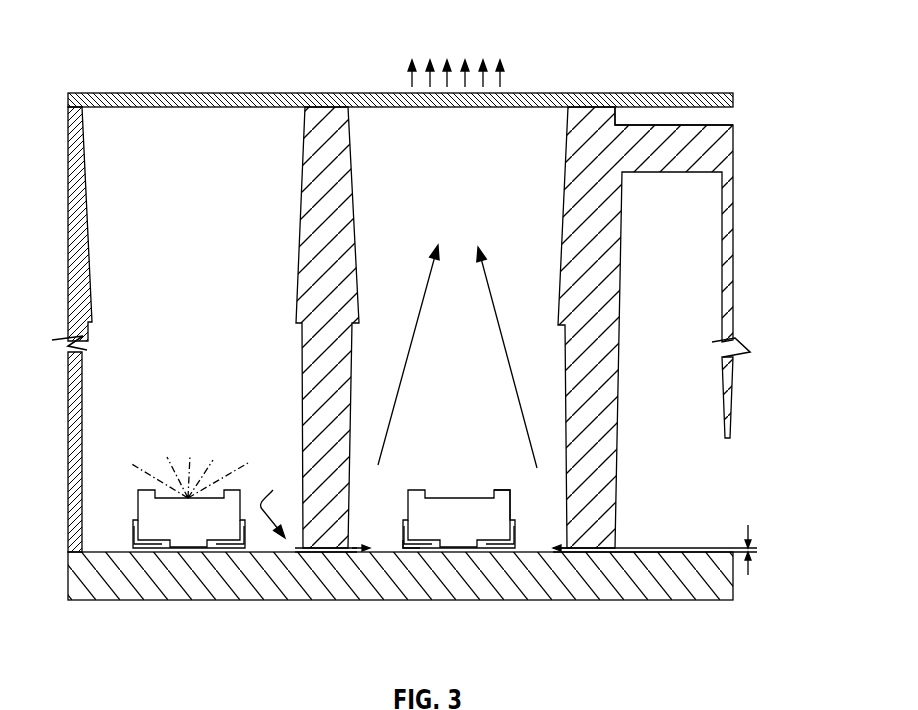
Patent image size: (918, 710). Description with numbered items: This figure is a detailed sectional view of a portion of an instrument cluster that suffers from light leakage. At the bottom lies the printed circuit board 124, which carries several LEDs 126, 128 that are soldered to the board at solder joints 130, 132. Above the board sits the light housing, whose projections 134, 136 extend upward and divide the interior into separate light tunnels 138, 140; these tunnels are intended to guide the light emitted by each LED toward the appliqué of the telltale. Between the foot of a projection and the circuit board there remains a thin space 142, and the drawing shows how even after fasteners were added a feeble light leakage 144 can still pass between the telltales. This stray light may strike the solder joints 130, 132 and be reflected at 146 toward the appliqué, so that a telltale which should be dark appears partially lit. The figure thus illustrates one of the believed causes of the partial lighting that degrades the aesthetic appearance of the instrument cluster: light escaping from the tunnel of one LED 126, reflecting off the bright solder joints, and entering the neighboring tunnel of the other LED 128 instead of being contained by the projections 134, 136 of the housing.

The printed circuit board 124 is at (158, 600).
The LED 126 is at (140, 502).
The LED 128 is at (447, 498).
The solder joint 130 is at (397, 548).
The solder joint 132 is at (502, 492).
The projection 134 is at (303, 173).
The projection 136 is at (566, 165).
The light tunnel 138 is at (449, 199).
The light tunnel 140 is at (201, 329).
The space 142 is at (757, 548).
The light leakage 144 is at (278, 499).
The reflection 146 is at (397, 403).